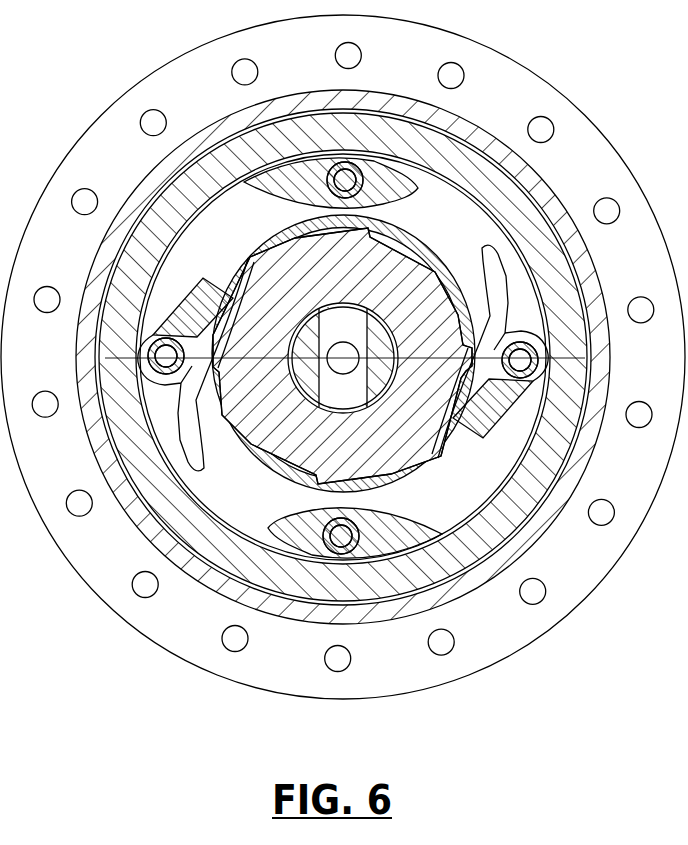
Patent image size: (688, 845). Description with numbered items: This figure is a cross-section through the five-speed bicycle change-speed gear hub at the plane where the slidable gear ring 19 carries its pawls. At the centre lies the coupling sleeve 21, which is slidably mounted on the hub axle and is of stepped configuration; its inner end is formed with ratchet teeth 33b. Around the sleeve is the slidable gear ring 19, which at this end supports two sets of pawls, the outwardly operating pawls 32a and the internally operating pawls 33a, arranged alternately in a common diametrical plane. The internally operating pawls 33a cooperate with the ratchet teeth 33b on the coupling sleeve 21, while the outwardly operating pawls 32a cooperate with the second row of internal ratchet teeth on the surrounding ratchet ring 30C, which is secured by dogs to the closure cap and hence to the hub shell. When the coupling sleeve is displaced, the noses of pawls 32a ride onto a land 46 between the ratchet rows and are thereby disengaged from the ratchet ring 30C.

The land 46 is at (430, 163).
The ratchet ring 30C is at (545, 264).
The outwardly operating pawls 32a is at (400, 190).
The internally operating pawls 33a is at (188, 410).
The ratchet teeth 33b is at (232, 290).
The slidable gear ring 19 is at (247, 462).
The coupling sleeve 21 is at (374, 278).